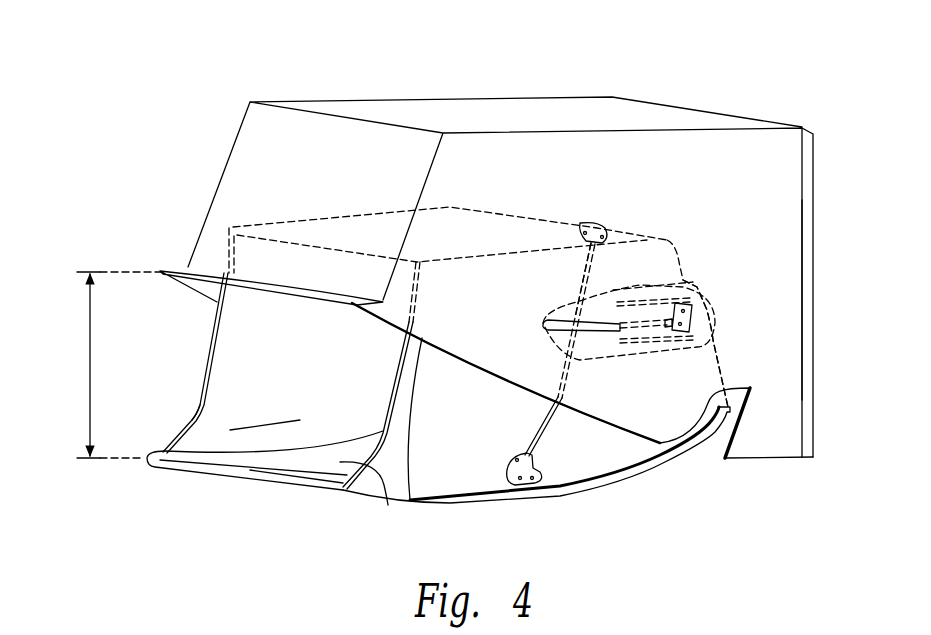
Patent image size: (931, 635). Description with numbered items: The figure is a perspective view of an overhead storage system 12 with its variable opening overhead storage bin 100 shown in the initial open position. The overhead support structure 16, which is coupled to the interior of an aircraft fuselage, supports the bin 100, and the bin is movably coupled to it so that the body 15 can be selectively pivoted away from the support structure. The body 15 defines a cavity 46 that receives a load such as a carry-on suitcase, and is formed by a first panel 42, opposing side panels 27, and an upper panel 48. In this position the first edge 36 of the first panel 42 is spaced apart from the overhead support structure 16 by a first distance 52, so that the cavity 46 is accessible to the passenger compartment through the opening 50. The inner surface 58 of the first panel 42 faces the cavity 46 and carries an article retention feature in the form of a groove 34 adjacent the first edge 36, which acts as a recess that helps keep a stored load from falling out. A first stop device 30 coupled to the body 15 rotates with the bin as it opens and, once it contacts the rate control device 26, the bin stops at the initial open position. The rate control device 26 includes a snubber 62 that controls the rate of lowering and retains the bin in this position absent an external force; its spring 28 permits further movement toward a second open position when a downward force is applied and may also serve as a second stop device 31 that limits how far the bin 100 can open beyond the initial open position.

The overhead storage system 12 is at (797, 98).
The body 15 is at (193, 320).
The overhead support structure 16 is at (785, 240).
The rate control device 26 is at (663, 388).
The opposing side panels 27 is at (458, 460).
The spring 28 is at (553, 275).
The first stop device 30 is at (690, 310).
The second stop device 31 is at (523, 335).
The groove 34 is at (353, 460).
The first edge 36 is at (163, 460).
The first panel 42 is at (320, 493).
The cavity 46 is at (278, 413).
The upper panel 48 is at (298, 227).
The opening 50 is at (203, 373).
The first distance 52 is at (85, 352).
The inner surface 58 is at (337, 463).
The snubber 62 is at (582, 265).
The variable opening overhead storage bin 100 is at (182, 402).